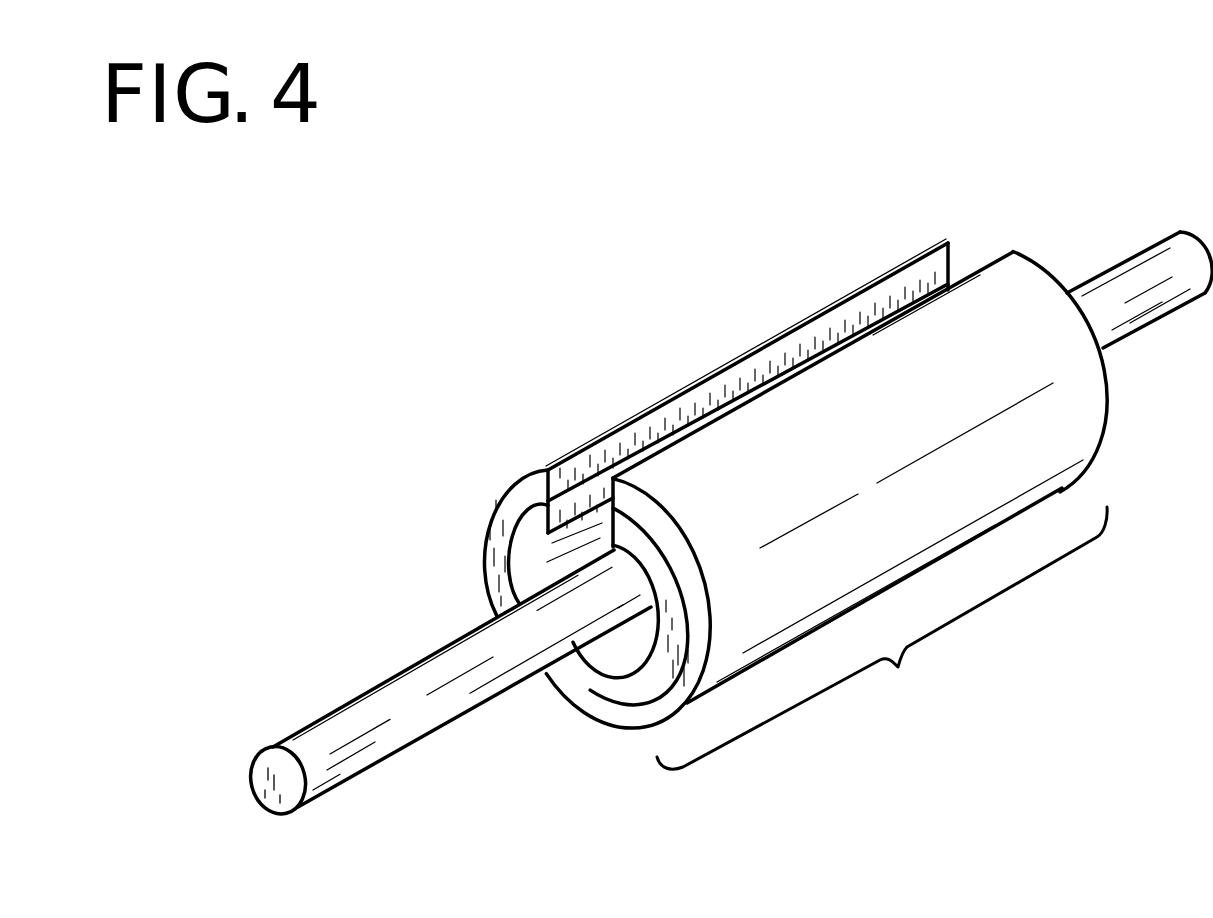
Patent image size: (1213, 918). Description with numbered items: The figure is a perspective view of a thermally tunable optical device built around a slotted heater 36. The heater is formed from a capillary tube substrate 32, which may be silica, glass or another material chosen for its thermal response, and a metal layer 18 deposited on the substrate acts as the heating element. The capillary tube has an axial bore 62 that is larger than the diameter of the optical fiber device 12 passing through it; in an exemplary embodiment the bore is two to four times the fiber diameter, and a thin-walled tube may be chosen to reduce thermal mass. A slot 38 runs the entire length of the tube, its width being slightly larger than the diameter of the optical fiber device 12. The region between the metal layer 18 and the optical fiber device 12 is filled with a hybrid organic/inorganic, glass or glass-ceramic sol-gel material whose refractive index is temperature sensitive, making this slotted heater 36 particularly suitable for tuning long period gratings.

The optical fiber device 12 is at (280, 725).
The metal layer 18 is at (530, 537).
The substrate 32 is at (1107, 401).
The slotted heater 36 is at (882, 638).
The slot 38 is at (624, 410).
The axial bore 62 is at (617, 648).